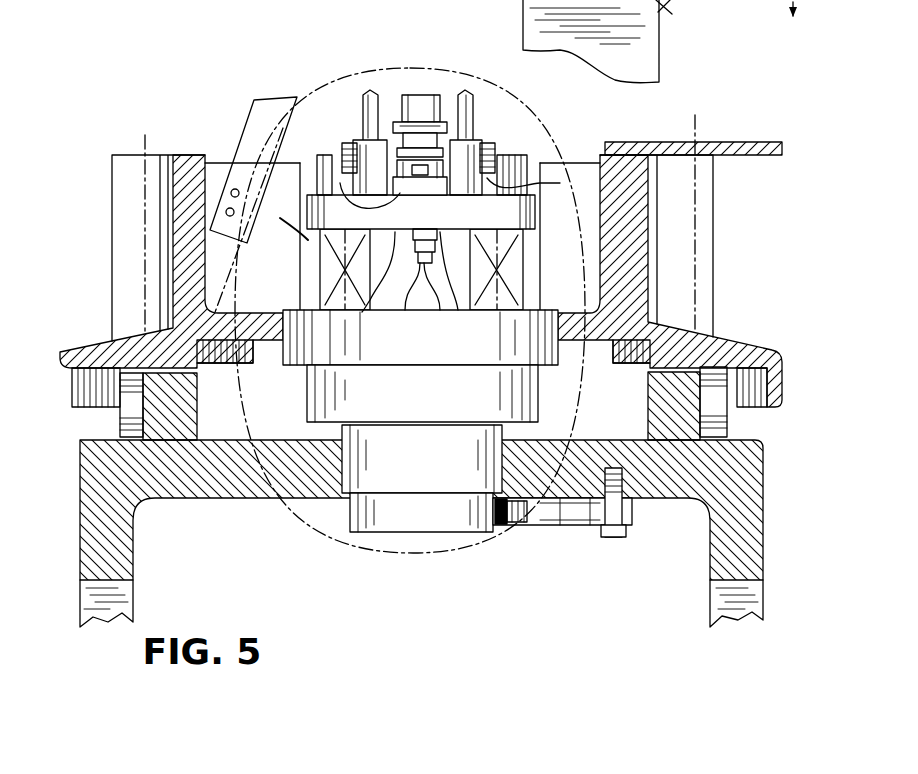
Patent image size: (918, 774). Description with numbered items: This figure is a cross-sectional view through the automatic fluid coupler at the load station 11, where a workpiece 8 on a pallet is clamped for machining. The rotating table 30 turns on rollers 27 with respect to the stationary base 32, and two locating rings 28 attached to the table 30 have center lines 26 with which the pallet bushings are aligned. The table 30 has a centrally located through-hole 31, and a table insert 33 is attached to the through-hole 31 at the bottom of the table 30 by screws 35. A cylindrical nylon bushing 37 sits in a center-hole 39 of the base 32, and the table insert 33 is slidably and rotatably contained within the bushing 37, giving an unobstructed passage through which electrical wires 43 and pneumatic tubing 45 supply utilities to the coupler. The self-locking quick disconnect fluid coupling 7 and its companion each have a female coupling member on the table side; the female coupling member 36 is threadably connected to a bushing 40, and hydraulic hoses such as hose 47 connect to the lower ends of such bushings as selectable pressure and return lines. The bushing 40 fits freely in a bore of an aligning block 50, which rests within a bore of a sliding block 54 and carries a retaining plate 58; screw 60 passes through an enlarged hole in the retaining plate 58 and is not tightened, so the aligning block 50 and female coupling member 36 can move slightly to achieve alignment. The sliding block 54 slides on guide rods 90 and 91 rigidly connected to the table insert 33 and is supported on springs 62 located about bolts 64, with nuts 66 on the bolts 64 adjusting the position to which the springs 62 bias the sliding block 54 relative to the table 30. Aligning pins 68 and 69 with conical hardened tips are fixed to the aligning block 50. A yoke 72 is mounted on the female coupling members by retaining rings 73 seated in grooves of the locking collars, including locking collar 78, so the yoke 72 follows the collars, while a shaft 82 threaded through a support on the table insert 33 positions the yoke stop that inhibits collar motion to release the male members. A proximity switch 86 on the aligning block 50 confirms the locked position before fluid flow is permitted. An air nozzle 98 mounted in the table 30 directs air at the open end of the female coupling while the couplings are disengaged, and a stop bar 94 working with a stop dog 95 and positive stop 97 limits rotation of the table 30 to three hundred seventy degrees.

The fluid coupling 7 is at (328, 92).
The workpiece 8 is at (322, 566).
The load station 11 is at (125, 122).
The center lines of locating rings 26 is at (148, 147).
The rollers 27 is at (125, 422).
The locating rings 28 is at (780, 158).
The table 30 is at (740, 338).
The through-hole 31 is at (548, 185).
The stationary base 32 is at (233, 500).
The table insert 33 is at (432, 582).
The screws 35 is at (292, 372).
The female coupling member 36 is at (432, 90).
The cylindrical nylon bushing 37 is at (422, 459).
The center-hole 39 is at (360, 512).
The bushing 40 is at (421, 212).
The electrical wires 43 is at (458, 312).
The pneumatic tubing 45 is at (366, 312).
The hydraulic hose 47 is at (405, 312).
The aligning block 50 is at (488, 128).
The sliding block 54 is at (302, 232).
The retaining plate 58 is at (340, 172).
The screw 60 is at (396, 128).
The springs 62 is at (330, 278).
The bolts 64 is at (350, 142).
The nuts 66 is at (560, 193).
The aligning pin 68 is at (366, 90).
The aligning pin 69 is at (465, 92).
The yoke 72 is at (452, 92).
The retaining rings 73 is at (405, 96).
The locking collar 78 is at (424, 85).
The shaft 82 is at (440, 310).
The proximity switch 86 is at (424, 232).
The guide rod 90 is at (258, 155).
The guide rod 91 is at (533, 165).
The stop bar 94 is at (568, 526).
The stop dog 95 is at (515, 527).
The positive stop 97 is at (787, 19).
The air nozzle 98 is at (275, 97).